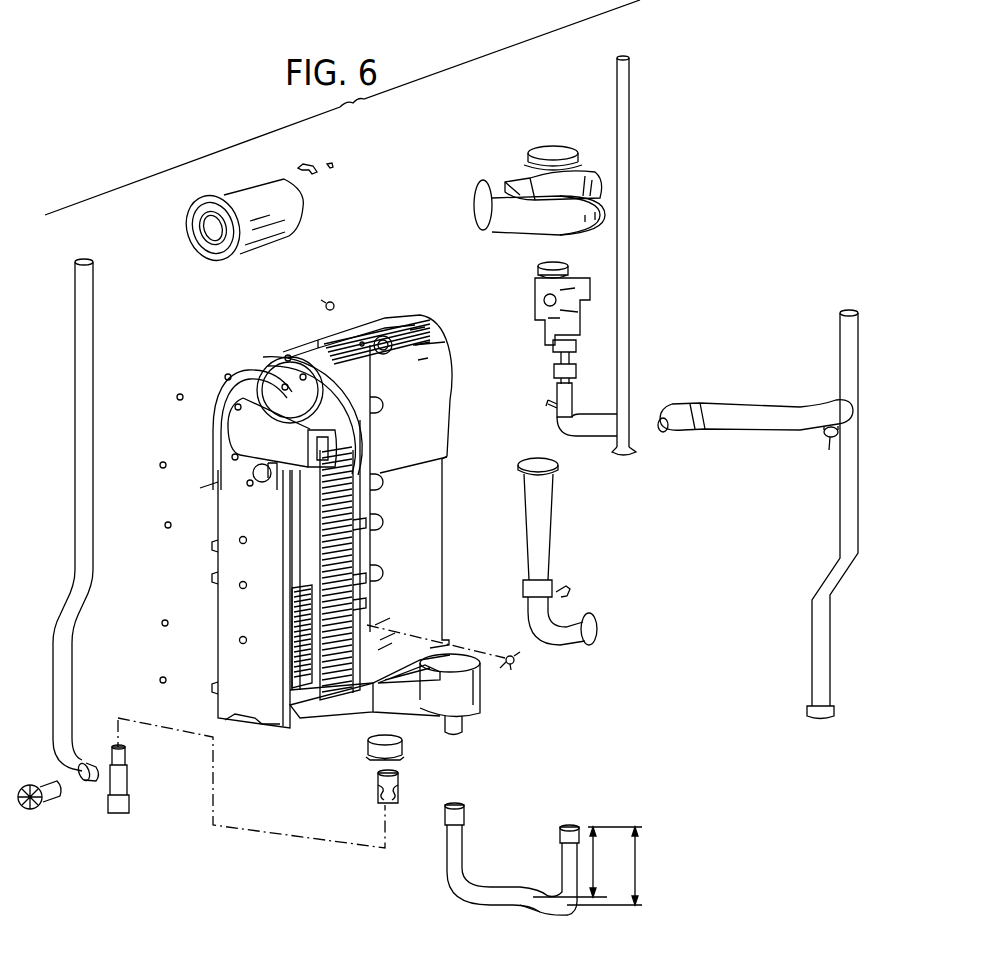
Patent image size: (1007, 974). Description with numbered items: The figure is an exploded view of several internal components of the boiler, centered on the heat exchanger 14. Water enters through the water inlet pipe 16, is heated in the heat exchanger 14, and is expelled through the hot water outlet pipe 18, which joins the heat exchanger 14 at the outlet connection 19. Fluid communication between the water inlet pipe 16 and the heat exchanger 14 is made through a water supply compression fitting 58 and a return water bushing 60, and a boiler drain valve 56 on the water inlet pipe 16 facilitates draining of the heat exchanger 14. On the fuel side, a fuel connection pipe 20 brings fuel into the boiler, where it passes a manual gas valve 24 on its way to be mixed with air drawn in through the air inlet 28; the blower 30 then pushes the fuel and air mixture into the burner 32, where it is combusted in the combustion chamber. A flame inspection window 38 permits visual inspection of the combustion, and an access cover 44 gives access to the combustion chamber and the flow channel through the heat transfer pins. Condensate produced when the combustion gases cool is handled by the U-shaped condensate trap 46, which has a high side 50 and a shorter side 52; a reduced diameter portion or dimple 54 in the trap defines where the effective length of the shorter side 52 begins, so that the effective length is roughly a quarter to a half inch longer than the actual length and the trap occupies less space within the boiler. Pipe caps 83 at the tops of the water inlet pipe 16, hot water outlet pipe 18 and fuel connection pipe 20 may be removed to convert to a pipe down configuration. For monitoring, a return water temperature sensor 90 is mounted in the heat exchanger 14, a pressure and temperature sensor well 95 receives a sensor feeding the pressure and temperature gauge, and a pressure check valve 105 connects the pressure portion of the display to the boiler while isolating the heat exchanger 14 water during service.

The heat exchanger 14 is at (413, 306).
The water inlet pipe 16 is at (95, 262).
The hot water outlet pipe 18 is at (840, 345).
The outlet connection 19 is at (420, 337).
The fuel connection pipe 20 is at (631, 63).
The manual gas valve 24 is at (555, 410).
The air inlet 28 is at (574, 647).
The blower 30 is at (505, 182).
The burner 32 is at (265, 245).
The flame inspection window 38 is at (232, 468).
The access cover 44 is at (218, 565).
The condensate trap 46 is at (463, 842).
The high side 50 is at (447, 877).
The shorter side 52 is at (558, 852).
The reduced diameter portion 54 is at (541, 893).
The boiler drain valve 56 is at (52, 806).
The water supply compression fitting 58 is at (401, 786).
The return water bushing 60 is at (405, 745).
The pipe cap 83 is at (807, 714).
The return water temperature sensor 90 is at (514, 667).
The pressure and temperature sensor well 95 is at (667, 433).
The pressure check valve 105 is at (829, 440).